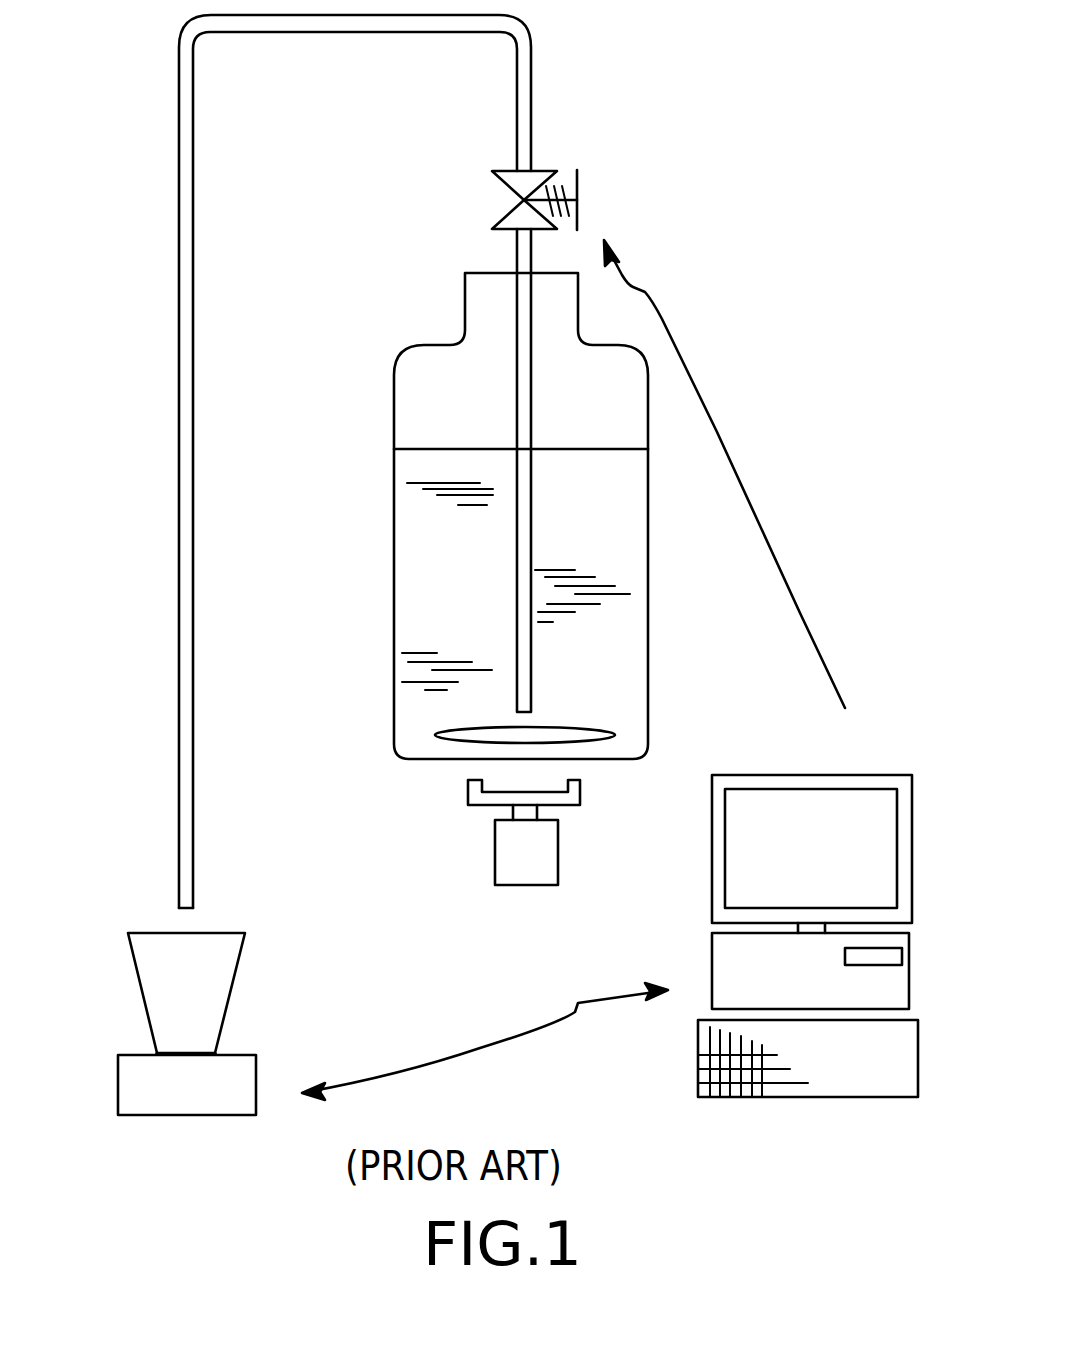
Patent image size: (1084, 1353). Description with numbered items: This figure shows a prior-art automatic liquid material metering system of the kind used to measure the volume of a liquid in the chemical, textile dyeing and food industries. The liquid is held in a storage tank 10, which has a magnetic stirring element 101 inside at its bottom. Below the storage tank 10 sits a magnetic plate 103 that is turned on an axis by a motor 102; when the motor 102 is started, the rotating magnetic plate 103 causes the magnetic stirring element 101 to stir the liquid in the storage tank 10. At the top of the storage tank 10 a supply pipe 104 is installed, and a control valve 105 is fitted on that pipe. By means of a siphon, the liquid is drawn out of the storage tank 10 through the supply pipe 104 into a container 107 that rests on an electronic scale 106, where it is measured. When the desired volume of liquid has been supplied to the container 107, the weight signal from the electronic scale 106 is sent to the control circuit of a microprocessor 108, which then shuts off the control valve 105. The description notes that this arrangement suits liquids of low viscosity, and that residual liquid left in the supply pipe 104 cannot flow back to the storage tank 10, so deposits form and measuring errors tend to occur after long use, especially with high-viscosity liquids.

The storage tank 10 is at (648, 576).
The magnetic stirring element 101 is at (472, 736).
The motor 102 is at (507, 877).
The magnetic plate 103 is at (473, 805).
The supply pipe 104 is at (188, 282).
The control valve 105 is at (532, 180).
The electronic scale 106 is at (175, 1102).
The container 107 is at (217, 980).
The microprocessor 108 is at (748, 863).